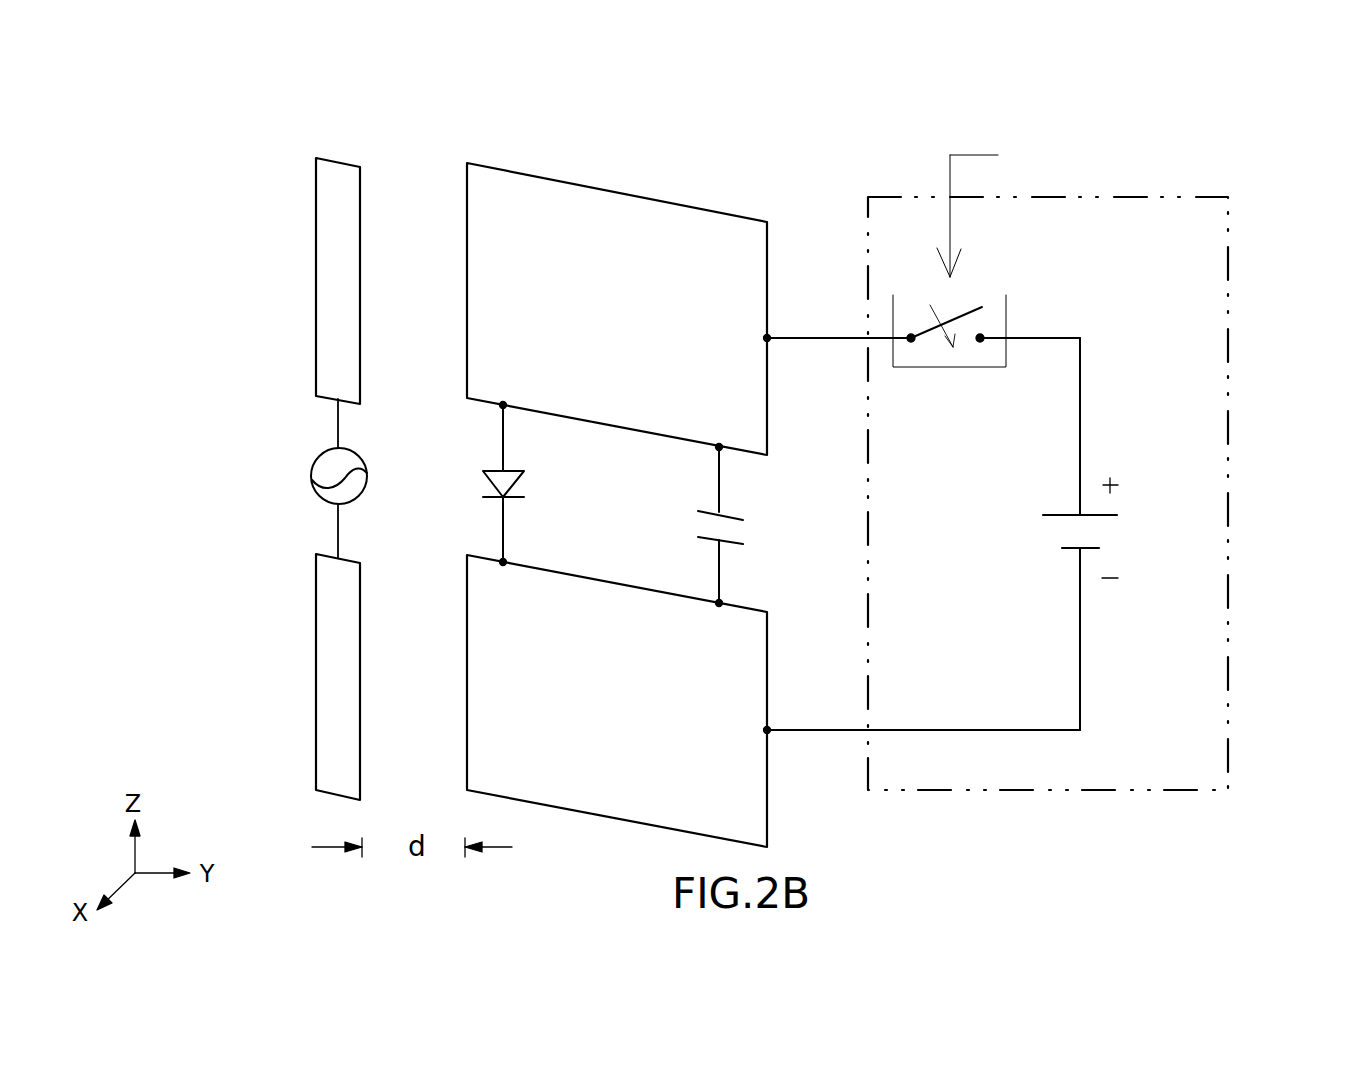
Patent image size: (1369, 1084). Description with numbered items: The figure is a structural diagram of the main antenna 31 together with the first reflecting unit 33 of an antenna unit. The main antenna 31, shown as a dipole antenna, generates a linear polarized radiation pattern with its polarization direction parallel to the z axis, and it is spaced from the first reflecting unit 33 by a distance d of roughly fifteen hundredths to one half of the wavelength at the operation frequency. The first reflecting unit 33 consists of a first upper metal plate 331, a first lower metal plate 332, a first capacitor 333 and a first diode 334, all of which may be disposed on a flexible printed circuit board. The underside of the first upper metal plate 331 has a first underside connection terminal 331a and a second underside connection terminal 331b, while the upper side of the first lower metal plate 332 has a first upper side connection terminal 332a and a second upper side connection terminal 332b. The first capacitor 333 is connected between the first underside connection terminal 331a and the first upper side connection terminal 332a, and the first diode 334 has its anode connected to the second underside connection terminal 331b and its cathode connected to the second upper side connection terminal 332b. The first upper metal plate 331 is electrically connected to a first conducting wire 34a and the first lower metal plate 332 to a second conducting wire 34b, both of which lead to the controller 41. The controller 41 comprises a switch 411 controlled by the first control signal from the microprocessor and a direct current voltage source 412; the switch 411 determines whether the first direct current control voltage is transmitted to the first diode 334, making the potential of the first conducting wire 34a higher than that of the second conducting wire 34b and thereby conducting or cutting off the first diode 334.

The main antenna 31 is at (275, 298).
The first reflecting unit 33 is at (612, 157).
The first upper metal plate 331 is at (686, 200).
The first lower metal plate 332 is at (622, 820).
The first underside connection terminal 331a is at (717, 446).
The second underside connection terminal 331b is at (505, 404).
The first upper side connection terminal 332a is at (717, 607).
The second upper side connection terminal 332b is at (505, 566).
The first capacitor 333 is at (690, 522).
The first diode 334 is at (525, 490).
The first conducting wire 34a is at (822, 335).
The second conducting wire 34b is at (800, 735).
The controller 41 is at (1235, 367).
The switch 411 is at (948, 367).
The direct current voltage source 412 is at (1042, 538).